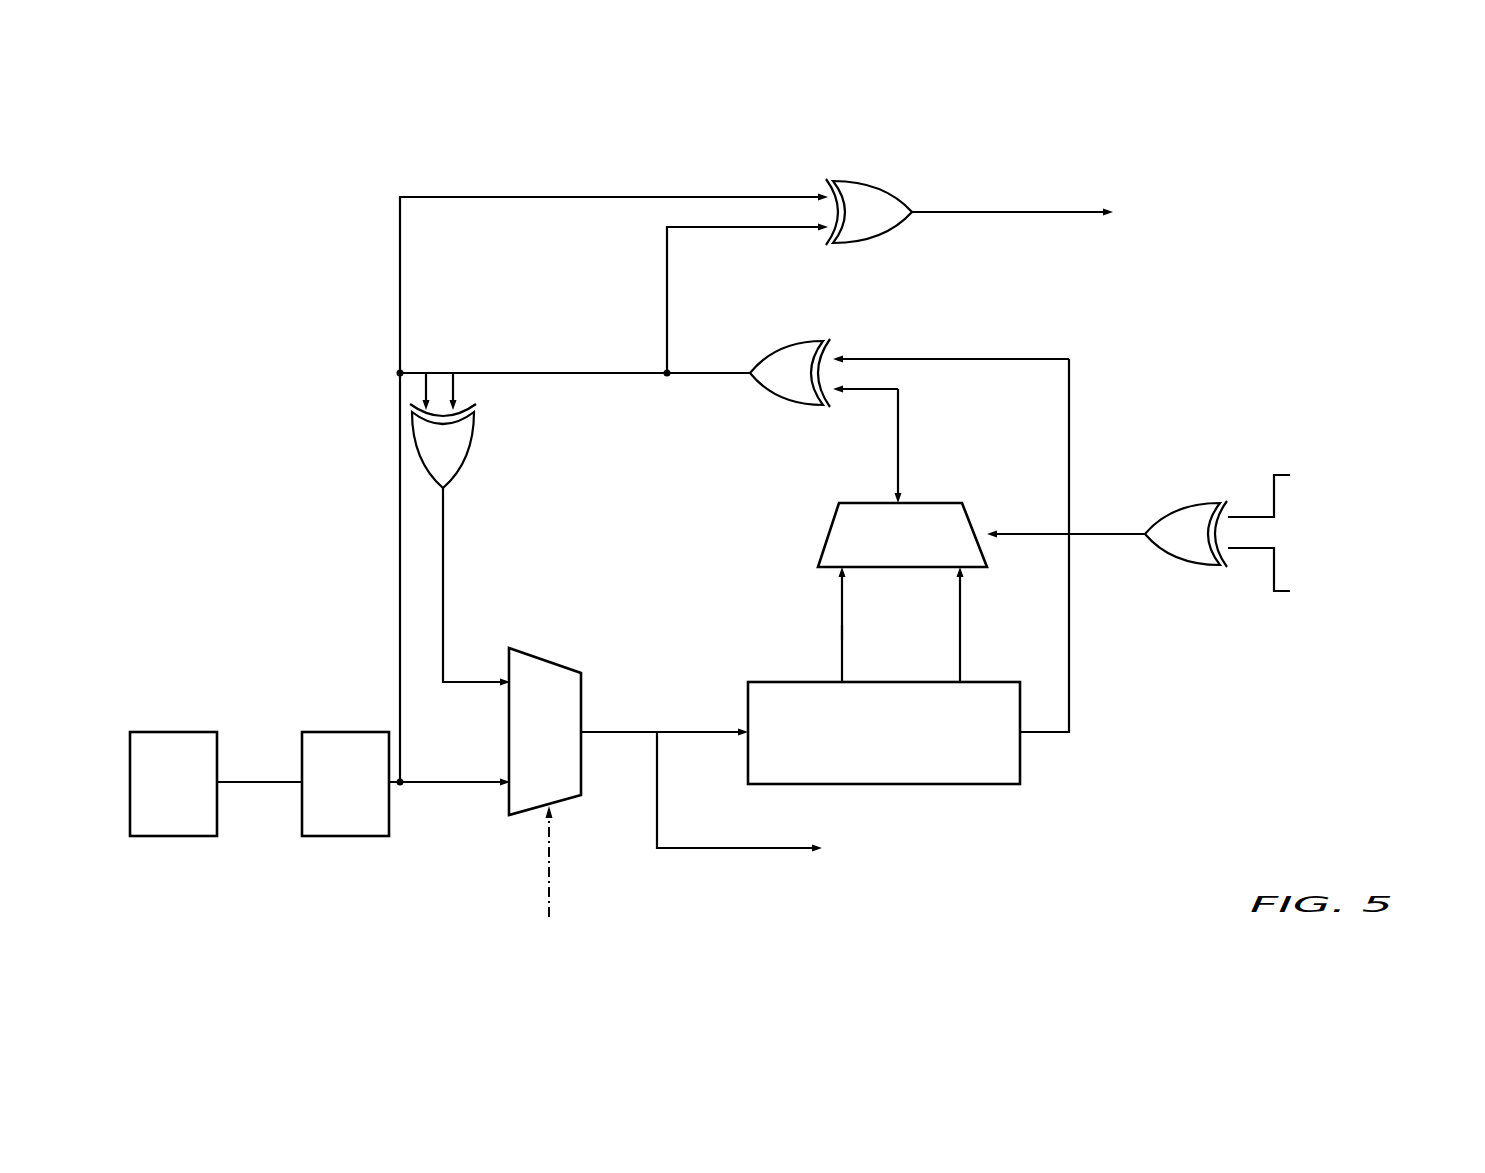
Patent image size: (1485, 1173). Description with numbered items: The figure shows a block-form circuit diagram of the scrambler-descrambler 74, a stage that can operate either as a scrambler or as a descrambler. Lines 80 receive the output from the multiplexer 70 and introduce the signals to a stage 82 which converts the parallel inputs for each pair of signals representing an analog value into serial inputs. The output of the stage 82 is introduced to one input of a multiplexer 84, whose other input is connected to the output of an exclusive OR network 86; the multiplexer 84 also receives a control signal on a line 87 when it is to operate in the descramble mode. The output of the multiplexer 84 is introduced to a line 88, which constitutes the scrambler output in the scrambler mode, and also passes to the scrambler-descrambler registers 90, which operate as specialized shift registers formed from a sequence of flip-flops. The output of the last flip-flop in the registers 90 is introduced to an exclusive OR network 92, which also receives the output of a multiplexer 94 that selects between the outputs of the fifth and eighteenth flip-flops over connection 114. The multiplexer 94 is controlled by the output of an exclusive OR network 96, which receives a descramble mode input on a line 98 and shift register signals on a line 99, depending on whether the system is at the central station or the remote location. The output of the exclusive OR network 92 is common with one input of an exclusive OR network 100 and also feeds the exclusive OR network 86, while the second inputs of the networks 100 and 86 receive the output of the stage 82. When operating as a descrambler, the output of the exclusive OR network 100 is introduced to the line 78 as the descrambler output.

The multiplexer 70 is at (183, 732).
The scrambler-descrambler 74 is at (580, 148).
The line 78 is at (1003, 213).
The lines 80 is at (270, 782).
The stage 82 is at (320, 732).
The multiplexer 84 is at (555, 662).
The exclusive OR network 86 is at (466, 458).
The line 87 is at (549, 868).
The line 88 is at (755, 848).
The scrambler-descrambler registers 90 is at (1020, 705).
The exclusive OR network 92 is at (793, 343).
The multiplexer 94 is at (870, 503).
The exclusive OR network 96 is at (1192, 503).
The line 98 is at (1243, 552).
The line 99 is at (1243, 515).
The exclusive OR network 100 is at (901, 226).
The register to multiplexer line 114 is at (842, 632).